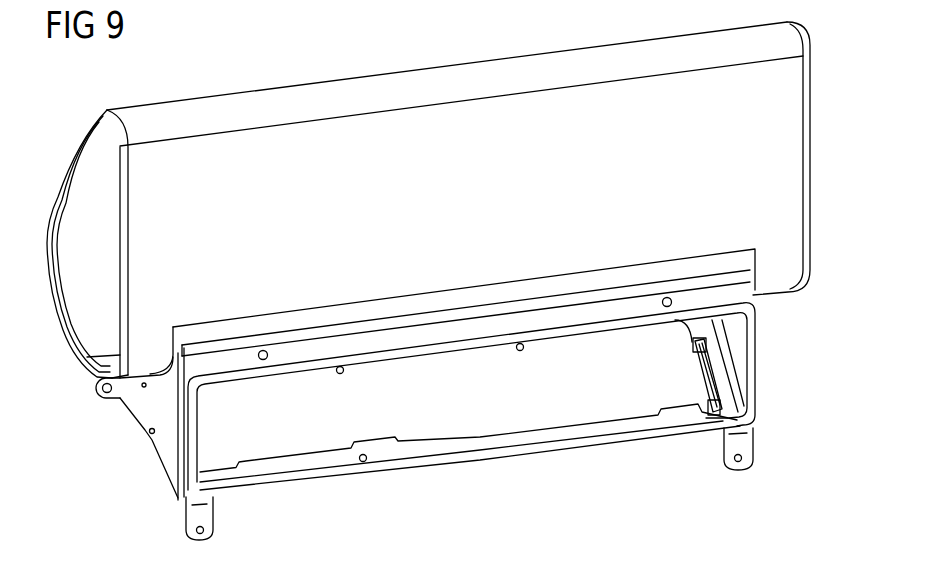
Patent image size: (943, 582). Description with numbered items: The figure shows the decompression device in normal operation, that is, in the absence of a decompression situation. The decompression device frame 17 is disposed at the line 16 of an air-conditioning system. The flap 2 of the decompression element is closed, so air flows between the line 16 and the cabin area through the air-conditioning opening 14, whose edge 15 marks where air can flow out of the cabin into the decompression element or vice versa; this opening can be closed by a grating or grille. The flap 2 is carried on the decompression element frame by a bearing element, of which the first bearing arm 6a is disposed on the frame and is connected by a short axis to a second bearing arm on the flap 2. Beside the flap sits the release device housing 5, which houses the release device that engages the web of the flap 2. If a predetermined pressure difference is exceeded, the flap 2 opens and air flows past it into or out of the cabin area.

The flap 2 is at (447, 433).
The release device housing 5 is at (716, 400).
The first bearing arm 6a is at (692, 352).
The air-conditioning opening 14 is at (275, 443).
The edge of an air-conditioning opening 15 is at (751, 367).
The line 16 is at (790, 160).
The decompression device frame 17 is at (165, 457).